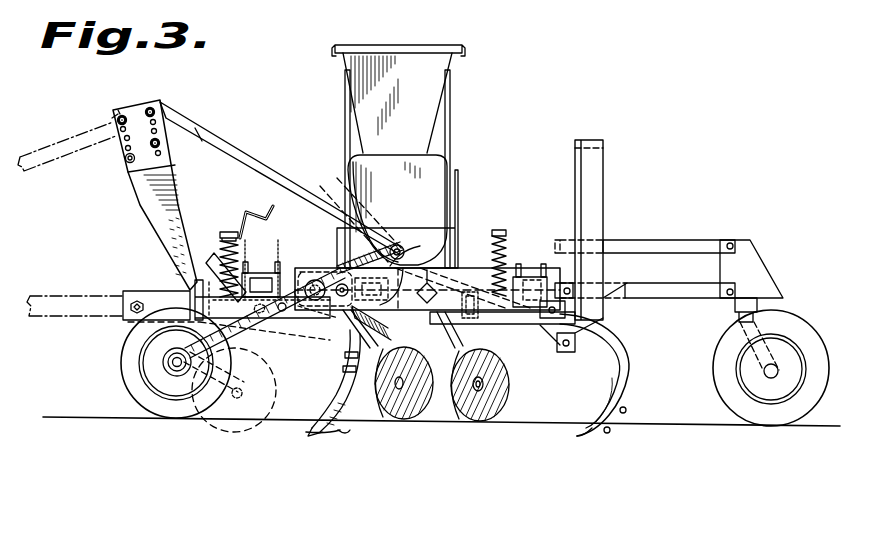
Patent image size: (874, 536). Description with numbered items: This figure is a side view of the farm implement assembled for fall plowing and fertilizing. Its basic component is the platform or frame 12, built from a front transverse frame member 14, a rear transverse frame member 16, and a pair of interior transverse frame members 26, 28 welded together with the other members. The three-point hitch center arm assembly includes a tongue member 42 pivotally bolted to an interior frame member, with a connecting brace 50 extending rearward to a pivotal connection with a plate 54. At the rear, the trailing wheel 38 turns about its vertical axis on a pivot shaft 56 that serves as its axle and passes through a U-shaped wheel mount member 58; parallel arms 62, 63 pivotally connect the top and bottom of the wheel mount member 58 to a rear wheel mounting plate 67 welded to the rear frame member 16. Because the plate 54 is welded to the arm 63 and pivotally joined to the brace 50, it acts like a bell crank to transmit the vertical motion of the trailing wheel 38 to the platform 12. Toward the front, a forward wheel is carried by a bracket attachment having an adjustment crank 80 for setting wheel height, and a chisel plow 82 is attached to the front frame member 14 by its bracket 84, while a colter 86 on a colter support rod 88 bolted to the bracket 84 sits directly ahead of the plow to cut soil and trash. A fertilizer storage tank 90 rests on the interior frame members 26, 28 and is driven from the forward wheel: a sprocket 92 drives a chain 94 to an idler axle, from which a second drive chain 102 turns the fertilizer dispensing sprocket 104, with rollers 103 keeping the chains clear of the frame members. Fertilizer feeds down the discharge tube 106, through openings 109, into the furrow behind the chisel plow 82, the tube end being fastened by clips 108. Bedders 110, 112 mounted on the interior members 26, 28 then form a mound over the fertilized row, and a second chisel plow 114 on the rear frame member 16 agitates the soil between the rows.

The platform or frame 12 is at (470, 262).
The front transverse frame member 14 is at (262, 300).
The rear transverse frame member 16 is at (528, 276).
The interior transverse frame member 26 is at (334, 198).
The interior transverse frame member 28 is at (433, 269).
The trailing wheel 38 is at (788, 320).
The tongue member 42 is at (148, 206).
The connecting brace 50 is at (270, 178).
The plate 54 is at (606, 310).
The pivot shaft 56 is at (738, 312).
The wheel mount member 58 is at (752, 252).
The arm 62 is at (652, 242).
The arm 63 is at (660, 284).
The rear wheel mounting plate 67 is at (510, 262).
The adjustment crank 80 is at (242, 226).
The chisel plow 82 is at (332, 436).
The bracket 84 is at (270, 270).
The colter 86 is at (282, 384).
The colter support rod 88 is at (250, 356).
The storage tank 90 is at (423, 104).
The sprocket 92 is at (160, 372).
The chain 94 is at (170, 352).
The second drive chain 102 is at (328, 266).
The roller 103 is at (312, 260).
The fertilizer dispensing sprocket 104 is at (396, 244).
The discharge tube 106 is at (386, 328).
The clip 108 is at (336, 384).
The opening 109 is at (352, 436).
The bedder 110 is at (398, 420).
The bedder 112 is at (462, 412).
The chisel plow 114 is at (630, 384).